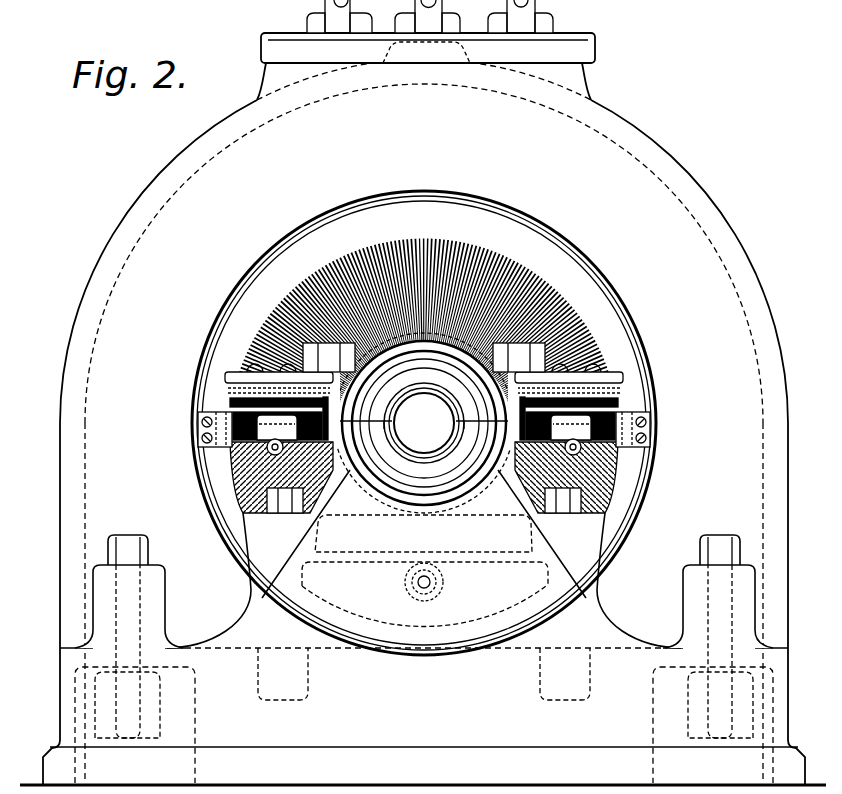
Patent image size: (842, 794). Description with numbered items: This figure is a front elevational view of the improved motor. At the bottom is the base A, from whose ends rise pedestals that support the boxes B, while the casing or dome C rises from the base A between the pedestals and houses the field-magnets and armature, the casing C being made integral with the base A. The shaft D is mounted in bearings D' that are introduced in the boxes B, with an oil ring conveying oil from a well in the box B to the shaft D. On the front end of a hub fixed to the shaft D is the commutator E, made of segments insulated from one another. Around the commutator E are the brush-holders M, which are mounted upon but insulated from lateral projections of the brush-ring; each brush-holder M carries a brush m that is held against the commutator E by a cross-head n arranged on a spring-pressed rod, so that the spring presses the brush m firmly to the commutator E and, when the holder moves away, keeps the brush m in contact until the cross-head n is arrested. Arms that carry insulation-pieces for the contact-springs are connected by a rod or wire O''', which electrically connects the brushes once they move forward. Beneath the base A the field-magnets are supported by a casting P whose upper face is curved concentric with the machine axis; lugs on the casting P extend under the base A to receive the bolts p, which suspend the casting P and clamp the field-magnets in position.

The casing C is at (424, 392).
The base A is at (423, 716).
The commutator E is at (530, 290).
The boxes B is at (424, 559).
The rod or wire O''' is at (426, 380).
The bearings D' is at (424, 423).
The shaft D is at (424, 423).
The brush-holders M is at (625, 415).
The brush m is at (603, 440).
The cross-head n is at (424, 435).
The bolts p is at (135, 552).
The casting P is at (107, 728).